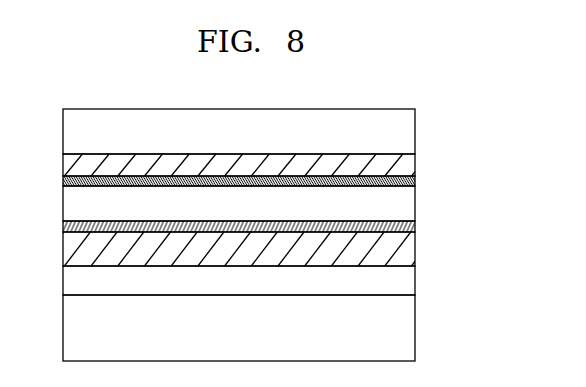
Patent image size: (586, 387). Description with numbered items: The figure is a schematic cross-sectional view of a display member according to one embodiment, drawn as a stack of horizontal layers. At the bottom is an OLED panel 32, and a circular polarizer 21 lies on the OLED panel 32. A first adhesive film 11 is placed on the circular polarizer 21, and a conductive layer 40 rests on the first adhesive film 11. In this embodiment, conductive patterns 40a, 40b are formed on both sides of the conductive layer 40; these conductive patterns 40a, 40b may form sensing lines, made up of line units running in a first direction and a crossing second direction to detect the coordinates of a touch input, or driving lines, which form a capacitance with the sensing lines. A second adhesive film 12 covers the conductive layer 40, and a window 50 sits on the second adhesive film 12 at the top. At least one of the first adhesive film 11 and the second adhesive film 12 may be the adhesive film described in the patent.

The window 50 is at (408, 131).
The second adhesive film 12 is at (408, 161).
The conductive pattern 40b is at (408, 181).
The conductive layer 40 is at (408, 204).
The conductive pattern 40a is at (408, 226).
The first adhesive film 11 is at (408, 248).
The circular polarizer 21 is at (408, 284).
The OLED panel 32 is at (408, 323).